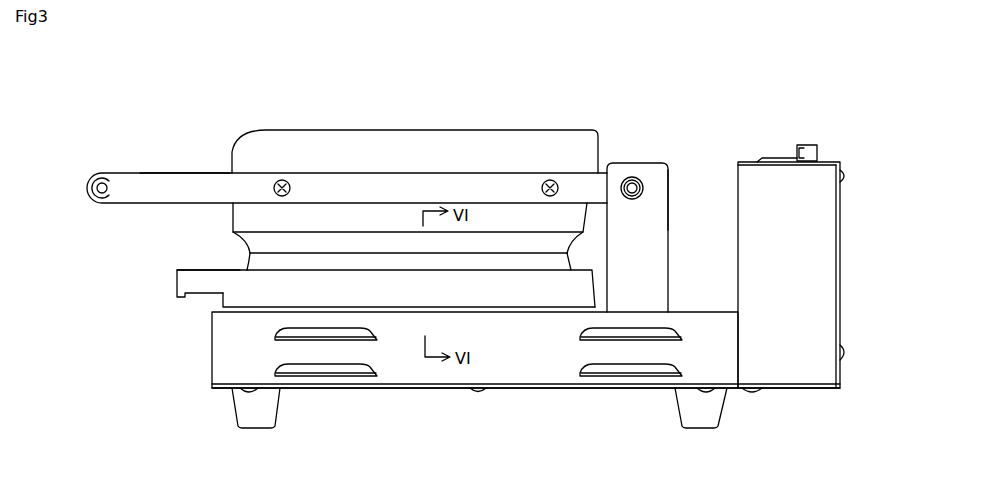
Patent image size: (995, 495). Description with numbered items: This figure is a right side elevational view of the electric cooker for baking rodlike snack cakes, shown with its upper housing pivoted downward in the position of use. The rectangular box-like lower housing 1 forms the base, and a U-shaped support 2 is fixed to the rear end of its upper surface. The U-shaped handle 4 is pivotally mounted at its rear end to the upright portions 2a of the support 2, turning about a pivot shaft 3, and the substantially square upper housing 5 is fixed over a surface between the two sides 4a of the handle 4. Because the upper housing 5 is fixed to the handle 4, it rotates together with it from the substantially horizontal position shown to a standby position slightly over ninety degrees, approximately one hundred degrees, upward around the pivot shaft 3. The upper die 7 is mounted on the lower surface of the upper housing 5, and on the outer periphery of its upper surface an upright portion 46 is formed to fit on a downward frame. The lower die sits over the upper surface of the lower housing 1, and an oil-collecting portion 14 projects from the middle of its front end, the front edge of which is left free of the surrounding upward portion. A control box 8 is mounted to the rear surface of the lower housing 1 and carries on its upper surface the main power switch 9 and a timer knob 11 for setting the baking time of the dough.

The lower housing 1 is at (543, 365).
The support 2 is at (653, 160).
The upright portion 2a is at (669, 190).
The pivot shaft 3 is at (632, 177).
The handle 4 is at (152, 170).
The side 4a is at (193, 172).
The upper housing 5 is at (468, 130).
The upper die 7 is at (505, 258).
The control box 8 is at (810, 253).
The main power switch 9 is at (797, 147).
The timer knob 11 is at (809, 145).
The oil-collecting portion 14 is at (177, 285).
The upright portion 46 is at (233, 218).